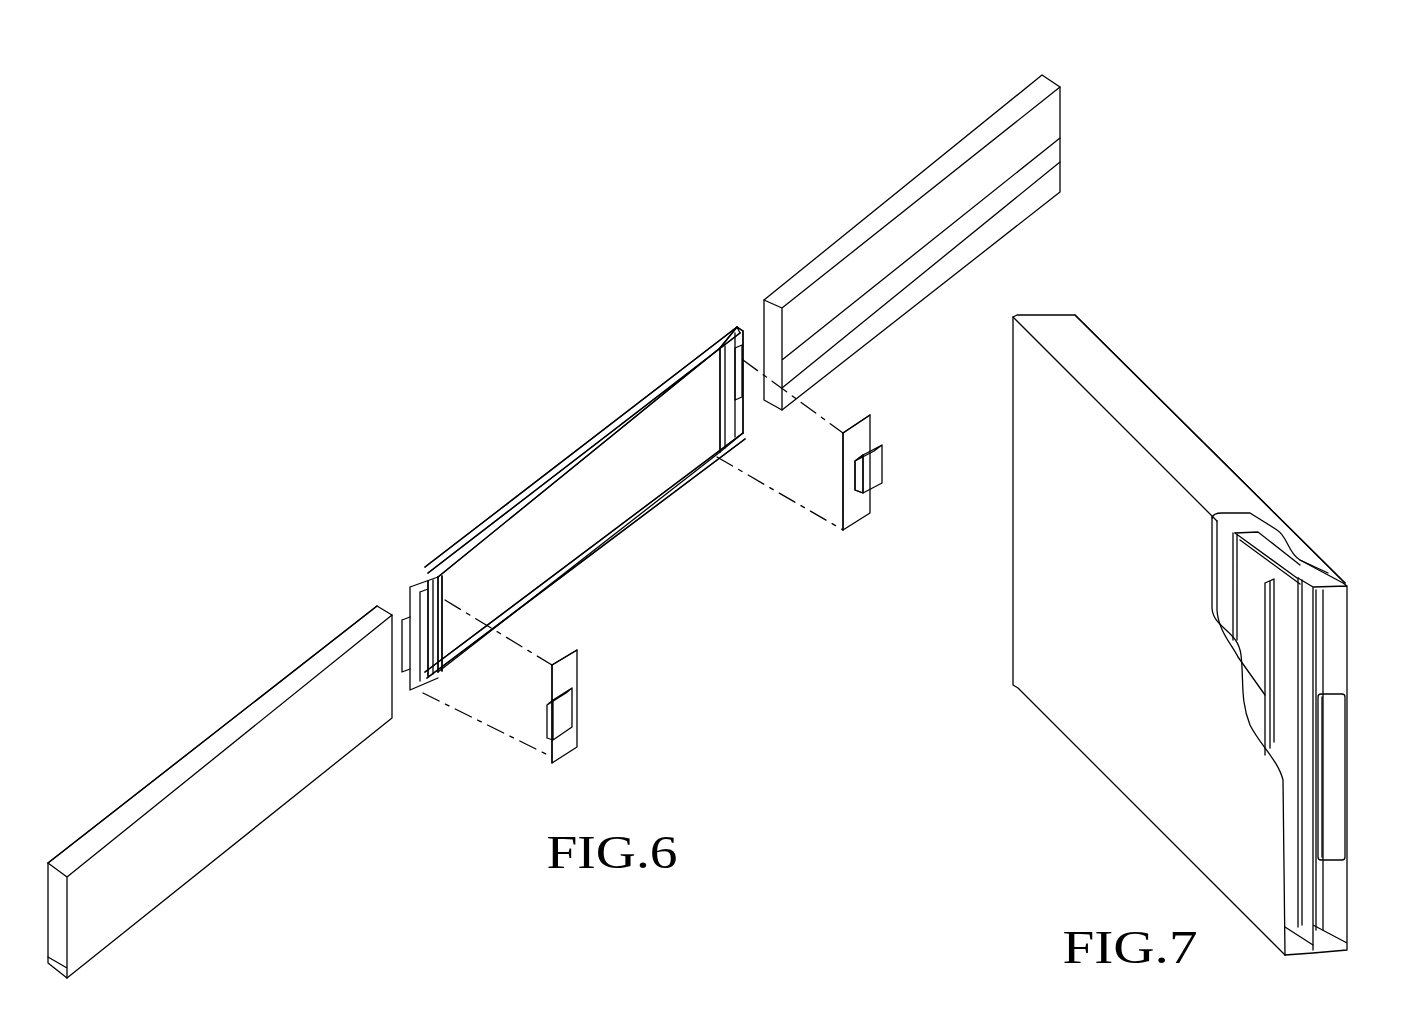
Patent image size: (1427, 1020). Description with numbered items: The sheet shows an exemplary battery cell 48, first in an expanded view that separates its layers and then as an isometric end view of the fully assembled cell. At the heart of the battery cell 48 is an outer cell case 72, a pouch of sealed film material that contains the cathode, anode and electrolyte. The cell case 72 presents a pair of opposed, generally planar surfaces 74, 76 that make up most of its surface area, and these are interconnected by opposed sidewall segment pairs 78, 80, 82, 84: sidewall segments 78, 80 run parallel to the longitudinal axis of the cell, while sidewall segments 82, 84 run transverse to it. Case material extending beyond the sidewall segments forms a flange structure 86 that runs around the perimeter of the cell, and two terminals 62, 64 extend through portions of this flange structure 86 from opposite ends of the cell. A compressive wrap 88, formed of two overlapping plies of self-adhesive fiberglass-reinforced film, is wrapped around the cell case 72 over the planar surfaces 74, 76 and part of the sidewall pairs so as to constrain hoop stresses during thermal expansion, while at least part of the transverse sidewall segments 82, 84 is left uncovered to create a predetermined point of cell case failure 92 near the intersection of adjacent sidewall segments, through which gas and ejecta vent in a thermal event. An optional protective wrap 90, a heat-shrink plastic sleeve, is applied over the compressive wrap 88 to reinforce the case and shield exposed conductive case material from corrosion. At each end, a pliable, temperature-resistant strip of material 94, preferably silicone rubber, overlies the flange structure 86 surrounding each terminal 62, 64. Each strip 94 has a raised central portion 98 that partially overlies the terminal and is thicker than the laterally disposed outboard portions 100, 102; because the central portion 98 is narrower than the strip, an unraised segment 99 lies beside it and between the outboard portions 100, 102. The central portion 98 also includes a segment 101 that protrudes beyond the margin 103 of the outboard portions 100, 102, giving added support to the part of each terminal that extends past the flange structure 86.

In FIG. 6, the battery cell 48 is at (528, 318).
In FIG. 7, the battery cell 48 is at (1232, 398).
In FIG. 6, the terminal 62 is at (403, 660).
In FIG. 7, the terminal 62 is at (1333, 783).
In FIG. 6, the terminal 64 is at (743, 365).
In FIG. 6, the outer cell case 72 is at (562, 460).
In FIG. 6, the planar surface 74 is at (621, 499).
In FIG. 7, the planar surface 76 is at (1247, 605).
In FIG. 6, the sidewall segment 78 is at (502, 508).
In FIG. 6, the sidewall segment 80 is at (613, 540).
In FIG. 6, the sidewall segment 82 is at (433, 630).
In FIG. 7, the sidewall segment 82 is at (1285, 685).
In FIG. 6, the sidewall segment 84 is at (722, 418).
In FIG. 6, the flange structure 86 is at (727, 337).
In FIG. 7, the flange structure 86 is at (1322, 577).
In FIG. 6, the compressive wrap 88 is at (872, 220).
In FIG. 7, the compressive wrap 88 is at (1235, 660).
In FIG. 6, the protective wrap 90 is at (257, 707).
In FIG. 7, the protective wrap 90 is at (1187, 822).
In FIG. 6, the predetermined point of cell case failure 92 is at (433, 590).
In FIG. 6, the strip of material 94 is at (580, 727).
In FIG. 7, the strip of material 94 is at (1316, 610).
In FIG. 6, the central portion 98 is at (877, 470).
In FIG. 6, the unraised segment 99 is at (847, 465).
In FIG. 6, the outboard portion 100 is at (567, 663).
In FIG. 6, the segment 101 is at (552, 720).
In FIG. 6, the outboard portion 102 is at (567, 747).
In FIG. 6, the margin 103 is at (552, 687).